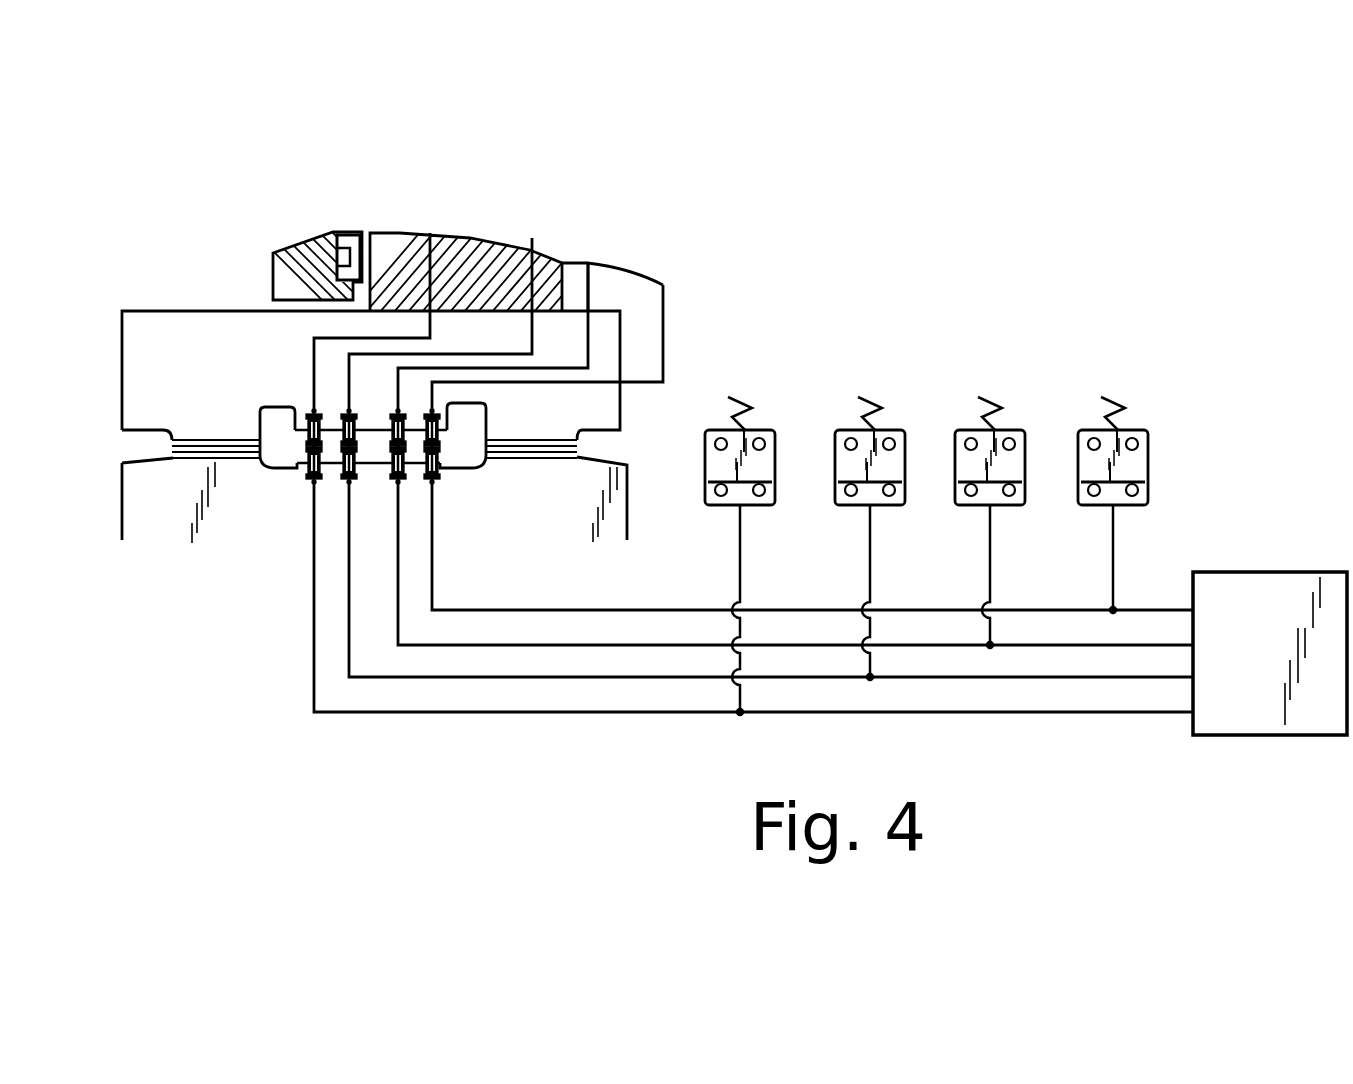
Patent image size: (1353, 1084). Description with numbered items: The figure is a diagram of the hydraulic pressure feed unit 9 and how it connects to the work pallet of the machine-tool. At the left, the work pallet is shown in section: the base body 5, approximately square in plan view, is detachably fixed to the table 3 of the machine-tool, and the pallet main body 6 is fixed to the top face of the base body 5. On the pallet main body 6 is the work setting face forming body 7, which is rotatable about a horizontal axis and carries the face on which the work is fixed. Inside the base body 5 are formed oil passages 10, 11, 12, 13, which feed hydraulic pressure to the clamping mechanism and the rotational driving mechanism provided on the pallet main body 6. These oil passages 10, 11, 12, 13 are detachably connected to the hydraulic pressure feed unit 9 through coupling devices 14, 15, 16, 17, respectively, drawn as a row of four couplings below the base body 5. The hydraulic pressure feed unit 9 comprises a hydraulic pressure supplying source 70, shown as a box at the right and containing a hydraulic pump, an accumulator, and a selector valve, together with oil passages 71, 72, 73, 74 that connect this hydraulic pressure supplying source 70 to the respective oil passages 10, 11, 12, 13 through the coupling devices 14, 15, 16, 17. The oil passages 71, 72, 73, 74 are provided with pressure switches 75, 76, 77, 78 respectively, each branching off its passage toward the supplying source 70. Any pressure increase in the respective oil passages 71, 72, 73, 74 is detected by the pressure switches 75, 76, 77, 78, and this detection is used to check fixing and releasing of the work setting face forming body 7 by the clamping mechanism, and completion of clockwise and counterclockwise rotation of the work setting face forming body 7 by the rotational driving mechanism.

The table 3 is at (122, 500).
The base body 5 is at (122, 357).
The pallet main body 6 is at (565, 259).
The work setting face forming body 7 is at (271, 281).
The hydraulic pressure feed unit 9 is at (932, 355).
The oil passage 10 is at (314, 358).
The oil passage 11 is at (474, 354).
The oil passage 12 is at (620, 345).
The oil passage 13 is at (664, 318).
The coupling device 14 is at (305, 468).
The coupling device 15 is at (340, 466).
The coupling device 16 is at (408, 467).
The coupling device 17 is at (442, 463).
The hydraulic pressure supplying source 70 is at (1276, 572).
The oil passage 71 is at (437, 713).
The oil passage 72 is at (540, 680).
The oil passage 73 is at (615, 648).
The oil passage 74 is at (688, 611).
The pressure switch 75 is at (762, 507).
The pressure switch 76 is at (890, 507).
The pressure switch 77 is at (1012, 507).
The pressure switch 78 is at (1148, 462).